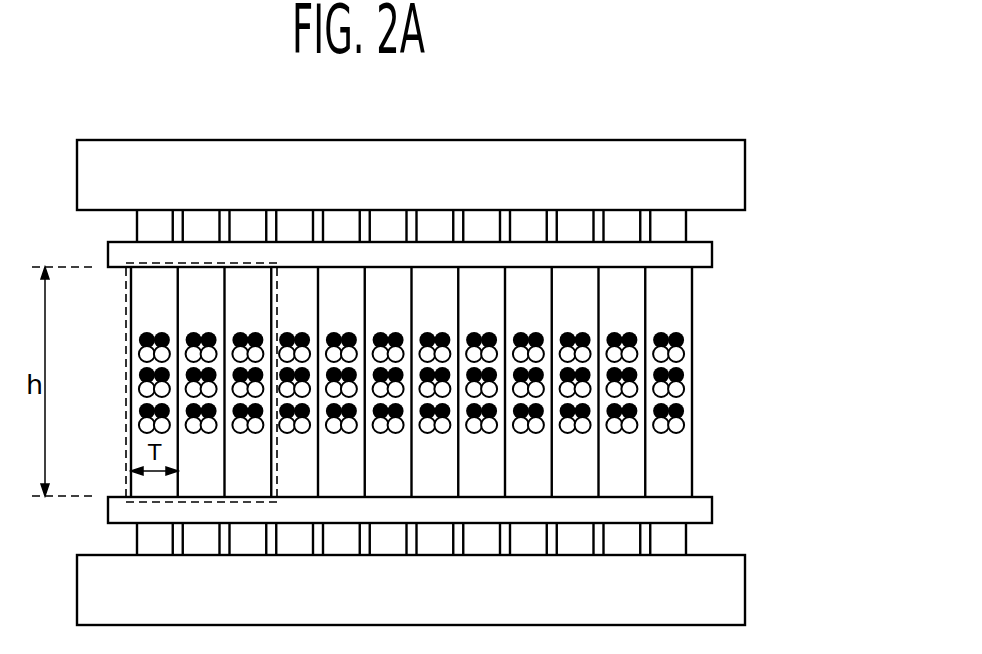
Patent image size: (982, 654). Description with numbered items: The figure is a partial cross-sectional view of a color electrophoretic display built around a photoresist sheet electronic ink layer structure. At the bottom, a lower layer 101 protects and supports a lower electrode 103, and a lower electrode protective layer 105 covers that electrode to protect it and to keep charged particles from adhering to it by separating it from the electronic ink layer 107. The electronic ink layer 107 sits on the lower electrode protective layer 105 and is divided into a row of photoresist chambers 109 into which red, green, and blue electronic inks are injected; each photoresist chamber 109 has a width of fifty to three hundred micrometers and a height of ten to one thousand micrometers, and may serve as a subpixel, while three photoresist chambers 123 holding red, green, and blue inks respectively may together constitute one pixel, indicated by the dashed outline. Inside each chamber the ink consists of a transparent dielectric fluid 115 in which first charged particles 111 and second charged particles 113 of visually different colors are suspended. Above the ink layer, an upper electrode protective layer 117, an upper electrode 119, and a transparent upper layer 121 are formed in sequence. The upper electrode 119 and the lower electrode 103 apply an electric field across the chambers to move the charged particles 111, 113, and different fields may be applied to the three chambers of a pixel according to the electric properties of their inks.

The lower layer 101 is at (745, 590).
The lower electrode 103 is at (686, 540).
The lower electrode protective layer 105 is at (712, 507).
The electronic ink layer 107 is at (489, 382).
The photoresist chamber 109 is at (692, 465).
The first charged particles 111 is at (682, 378).
The second charged particles 113 is at (682, 390).
The transparent dielectric fluid 115 is at (680, 323).
The upper electrode protective layer 117 is at (712, 256).
The upper electrode 119 is at (686, 223).
The transparent upper layer 121 is at (745, 170).
The three photoresist chambers 123 is at (125, 378).